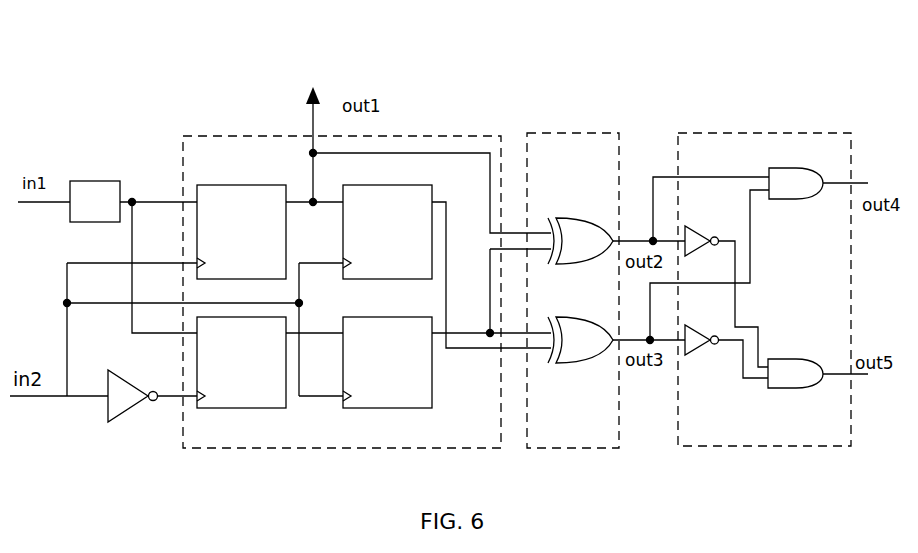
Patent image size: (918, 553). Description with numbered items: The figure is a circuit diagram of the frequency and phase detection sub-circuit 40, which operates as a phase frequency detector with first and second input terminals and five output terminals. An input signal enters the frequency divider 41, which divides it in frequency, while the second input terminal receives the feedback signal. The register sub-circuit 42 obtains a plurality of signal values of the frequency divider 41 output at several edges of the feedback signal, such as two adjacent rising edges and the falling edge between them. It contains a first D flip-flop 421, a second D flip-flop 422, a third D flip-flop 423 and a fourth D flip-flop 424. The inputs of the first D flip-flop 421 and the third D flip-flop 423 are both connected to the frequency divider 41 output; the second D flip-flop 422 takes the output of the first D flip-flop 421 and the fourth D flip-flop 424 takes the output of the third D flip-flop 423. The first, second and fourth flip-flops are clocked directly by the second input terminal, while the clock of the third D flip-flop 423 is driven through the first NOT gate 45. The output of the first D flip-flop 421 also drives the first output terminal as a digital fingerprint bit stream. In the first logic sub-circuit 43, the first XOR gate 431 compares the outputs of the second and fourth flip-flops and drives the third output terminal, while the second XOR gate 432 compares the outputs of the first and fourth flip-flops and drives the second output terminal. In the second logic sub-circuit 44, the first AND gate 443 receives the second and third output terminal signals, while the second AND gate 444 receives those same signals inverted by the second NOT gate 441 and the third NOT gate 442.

The frequency and phase detection sub-circuit 40 is at (478, 46).
The frequency divider 41 is at (90, 181).
The register sub-circuit 42 is at (228, 136).
The first D flip-flop 421 is at (232, 185).
The second D flip-flop 422 is at (372, 185).
The third D flip-flop 423 is at (232, 408).
The fourth D flip-flop 424 is at (360, 408).
The first logic sub-circuit 43 is at (542, 133).
The first XOR gate 431 is at (565, 363).
The second XOR gate 432 is at (565, 218).
The second logic sub-circuit 44 is at (717, 133).
The second NOT gate 441 is at (690, 355).
The third NOT gate 442 is at (693, 229).
The first AND gate 443 is at (775, 168).
The second AND gate 444 is at (775, 388).
The first NOT gate 45 is at (118, 413).